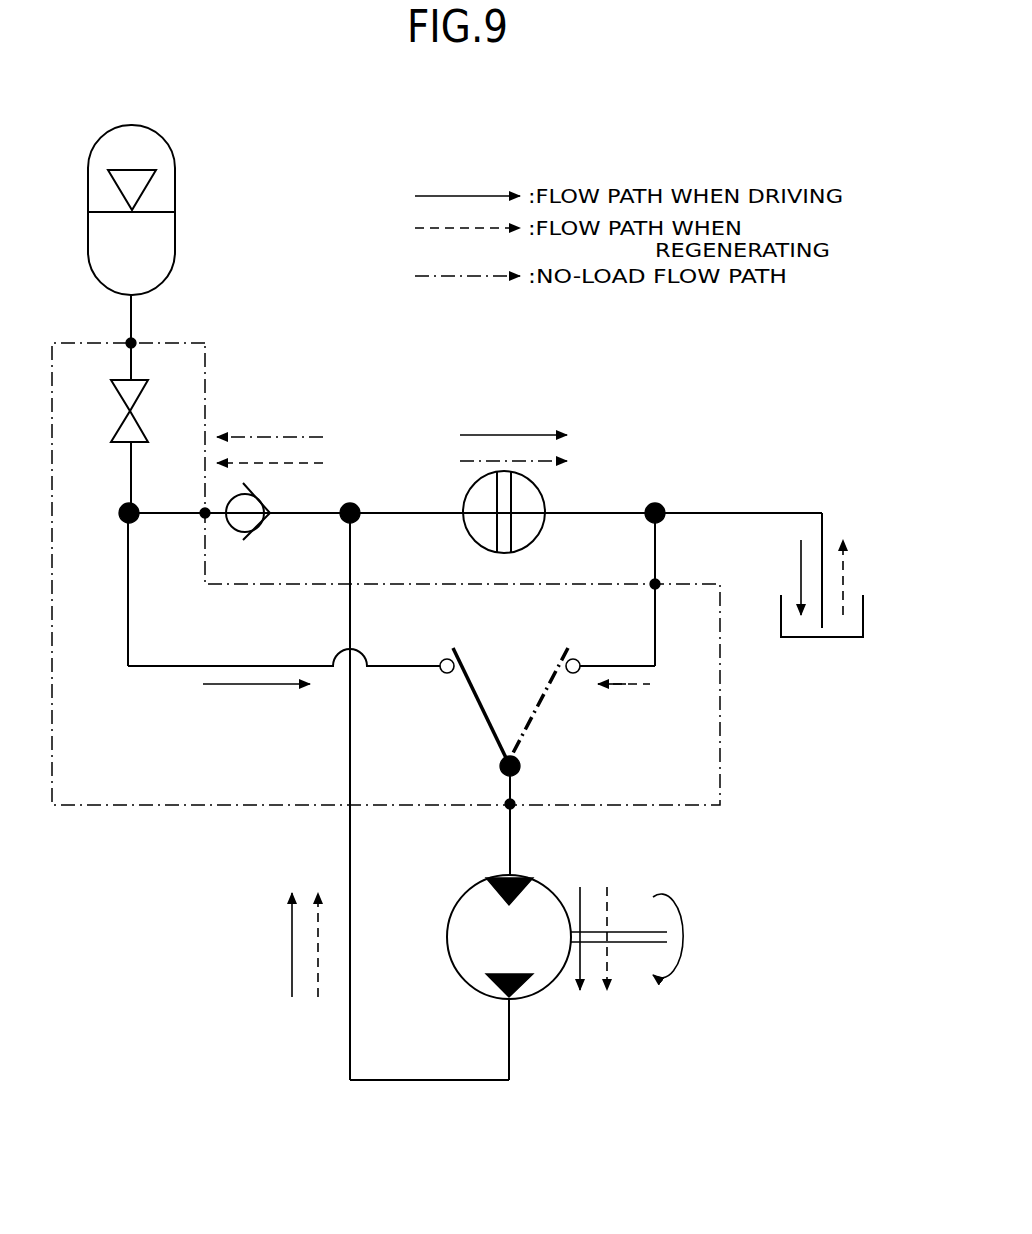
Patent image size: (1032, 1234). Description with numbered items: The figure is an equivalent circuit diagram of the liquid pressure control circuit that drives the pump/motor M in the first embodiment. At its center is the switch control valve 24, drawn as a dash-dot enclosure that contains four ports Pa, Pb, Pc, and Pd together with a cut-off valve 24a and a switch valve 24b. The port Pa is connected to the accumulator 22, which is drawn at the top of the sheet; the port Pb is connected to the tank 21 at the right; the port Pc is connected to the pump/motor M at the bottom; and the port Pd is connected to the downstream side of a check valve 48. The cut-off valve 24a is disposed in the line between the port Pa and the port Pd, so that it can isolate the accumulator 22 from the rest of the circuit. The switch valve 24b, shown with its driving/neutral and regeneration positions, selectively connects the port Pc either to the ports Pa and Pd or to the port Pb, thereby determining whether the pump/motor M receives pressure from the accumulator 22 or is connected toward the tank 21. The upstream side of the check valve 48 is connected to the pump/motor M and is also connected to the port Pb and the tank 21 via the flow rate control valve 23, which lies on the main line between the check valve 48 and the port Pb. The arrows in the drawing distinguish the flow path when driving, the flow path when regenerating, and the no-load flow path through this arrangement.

The tank 21 is at (781, 628).
The accumulator 22 is at (178, 172).
The flow rate control valve 23 is at (465, 497).
The switch control valve 24 is at (162, 808).
The cut-off valve 24a is at (143, 397).
The switch valve 24b is at (480, 702).
The check valve 48 is at (252, 517).
The pump/motor M is at (452, 915).
The port Pa is at (134, 340).
The port Pb is at (658, 580).
The port Pc is at (513, 807).
The port Pd is at (200, 518).